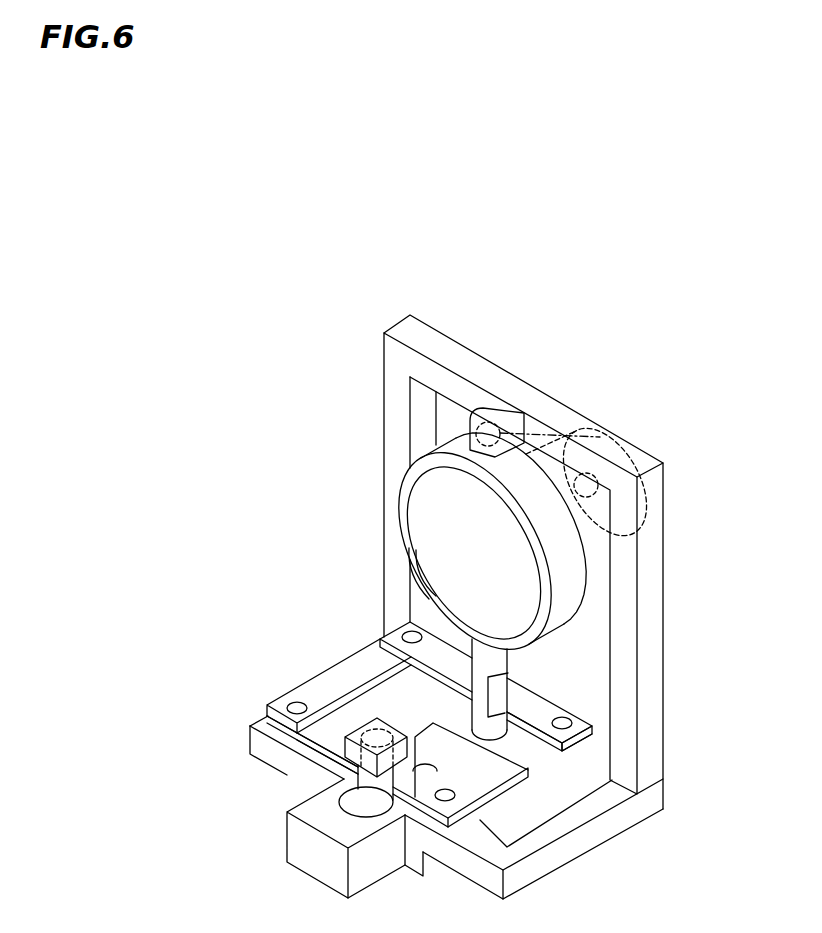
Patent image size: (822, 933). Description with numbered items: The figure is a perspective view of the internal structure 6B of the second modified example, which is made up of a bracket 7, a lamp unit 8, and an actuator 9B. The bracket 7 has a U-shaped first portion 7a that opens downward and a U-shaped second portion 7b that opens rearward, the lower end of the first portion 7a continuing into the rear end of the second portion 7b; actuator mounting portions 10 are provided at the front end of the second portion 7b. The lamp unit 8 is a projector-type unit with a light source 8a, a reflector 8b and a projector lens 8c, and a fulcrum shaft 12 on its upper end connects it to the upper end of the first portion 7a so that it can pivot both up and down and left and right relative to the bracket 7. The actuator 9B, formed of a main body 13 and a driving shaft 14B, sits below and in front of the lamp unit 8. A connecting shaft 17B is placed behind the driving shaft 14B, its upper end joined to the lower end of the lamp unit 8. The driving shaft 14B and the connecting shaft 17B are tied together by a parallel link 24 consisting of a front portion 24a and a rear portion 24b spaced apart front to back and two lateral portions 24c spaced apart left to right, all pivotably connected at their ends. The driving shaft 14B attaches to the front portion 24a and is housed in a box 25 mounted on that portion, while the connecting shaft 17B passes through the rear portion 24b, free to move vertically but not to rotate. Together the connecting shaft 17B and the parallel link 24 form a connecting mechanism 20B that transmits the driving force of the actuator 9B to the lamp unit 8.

The internal structure 6B is at (203, 404).
The bracket 7 is at (655, 567).
The first portion 7a is at (658, 590).
The second portion 7b is at (577, 842).
The lamp unit 8 is at (403, 483).
The light source 8a is at (587, 470).
The reflector 8b is at (600, 530).
The projector lens 8c is at (413, 540).
The actuator 9B is at (300, 866).
The actuator mounting portion 10 is at (437, 863).
The fulcrum shaft 12 is at (497, 417).
The main body 13 is at (378, 870).
The driving shaft 14B is at (345, 812).
The connecting shaft 17B is at (370, 645).
The connecting mechanism 20B is at (259, 567).
The parallel link 24 is at (350, 668).
The front portion 24a is at (317, 737).
The rear portion 24b is at (533, 697).
The lateral portion 24c is at (292, 682).
The box 25 is at (345, 762).